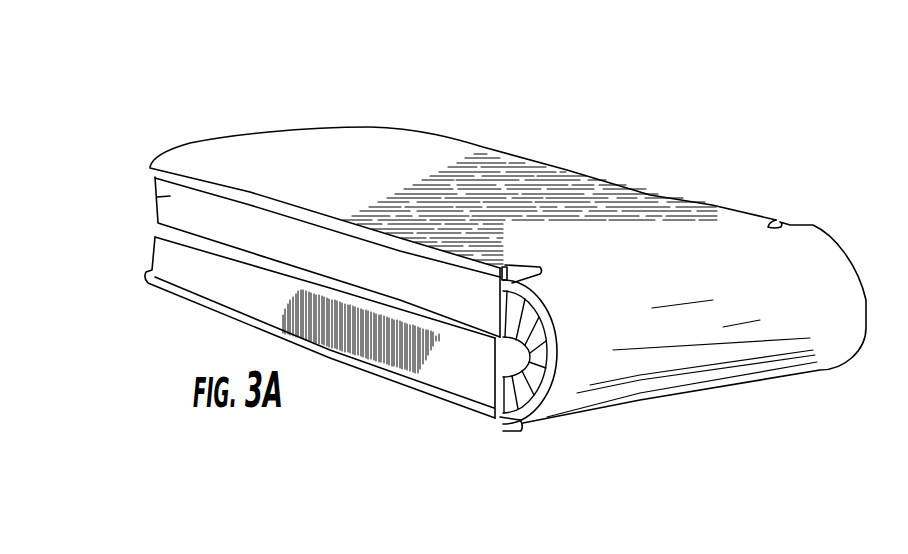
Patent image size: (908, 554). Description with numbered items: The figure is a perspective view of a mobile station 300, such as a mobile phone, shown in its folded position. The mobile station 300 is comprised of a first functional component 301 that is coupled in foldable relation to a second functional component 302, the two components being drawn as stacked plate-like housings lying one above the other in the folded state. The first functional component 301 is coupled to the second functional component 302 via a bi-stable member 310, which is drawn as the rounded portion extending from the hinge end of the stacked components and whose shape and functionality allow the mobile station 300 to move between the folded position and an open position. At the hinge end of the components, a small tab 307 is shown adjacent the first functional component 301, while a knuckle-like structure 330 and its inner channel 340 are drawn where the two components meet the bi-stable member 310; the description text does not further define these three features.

The mobile station 300 is at (667, 64).
The first functional component 301 is at (153, 183).
The second functional component 302 is at (205, 287).
The hinge tab 307 is at (512, 266).
The bi-stable member 310 is at (580, 368).
The hinge 330 is at (520, 423).
The hinge channel 340 is at (530, 313).